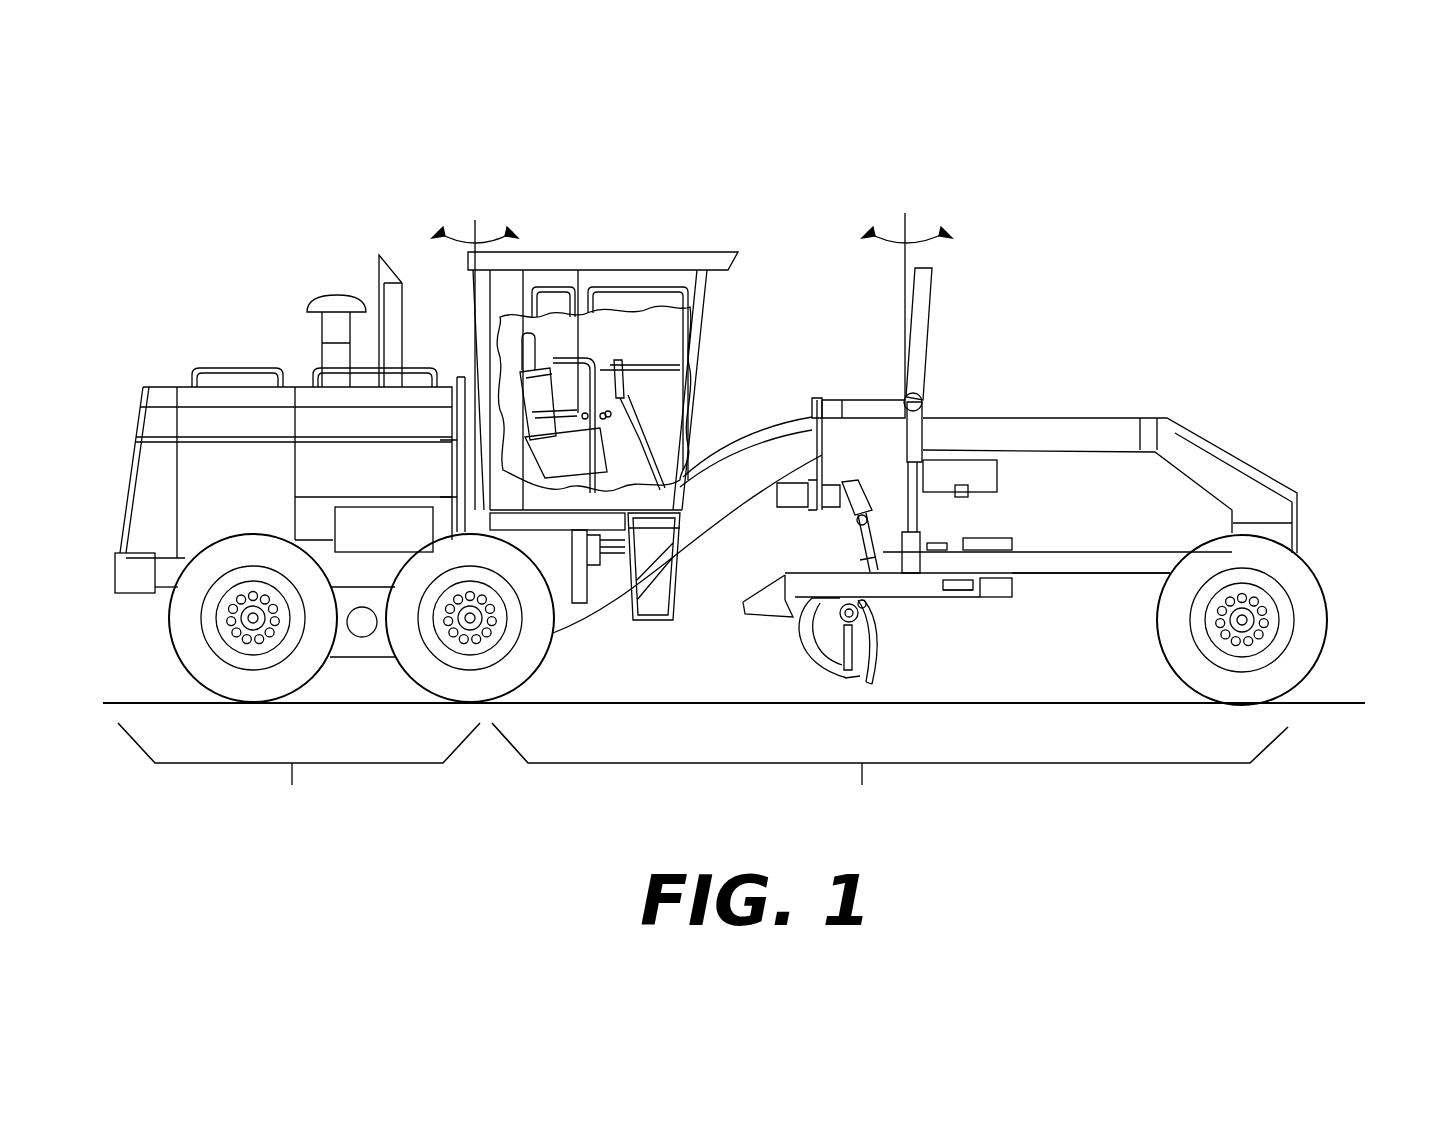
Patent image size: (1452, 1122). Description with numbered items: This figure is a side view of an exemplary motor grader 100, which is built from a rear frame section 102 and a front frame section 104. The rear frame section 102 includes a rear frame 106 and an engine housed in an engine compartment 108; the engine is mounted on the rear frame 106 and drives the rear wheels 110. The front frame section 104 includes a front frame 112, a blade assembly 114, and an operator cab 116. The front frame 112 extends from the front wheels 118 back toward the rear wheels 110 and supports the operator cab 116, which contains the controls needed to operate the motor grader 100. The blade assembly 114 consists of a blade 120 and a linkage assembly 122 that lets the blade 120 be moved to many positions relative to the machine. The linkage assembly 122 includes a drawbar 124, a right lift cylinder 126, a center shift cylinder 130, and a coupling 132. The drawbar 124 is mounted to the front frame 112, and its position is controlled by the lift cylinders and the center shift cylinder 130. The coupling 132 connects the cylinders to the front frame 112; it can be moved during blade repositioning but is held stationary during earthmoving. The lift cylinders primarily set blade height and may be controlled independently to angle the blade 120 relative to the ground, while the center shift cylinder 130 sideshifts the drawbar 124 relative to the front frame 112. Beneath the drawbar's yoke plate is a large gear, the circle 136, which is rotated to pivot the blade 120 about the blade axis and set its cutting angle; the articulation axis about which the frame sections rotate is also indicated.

The motor grader 100 is at (1109, 244).
The rear frame section 102 is at (299, 774).
The front frame section 104 is at (890, 774).
The rear frame 106 is at (344, 630).
The engine compartment 108 is at (188, 467).
The rear wheels 110 is at (188, 640).
The front frame 112 is at (1080, 433).
The blade assembly 114 is at (958, 604).
The operator cab 116 is at (713, 292).
The front wheels 118 is at (1328, 633).
The blade 120 is at (870, 668).
The linkage assembly 122 is at (973, 518).
The drawbar 124 is at (1128, 578).
The right lift cylinder 126 is at (930, 347).
The center shift cylinder 130 is at (842, 533).
The coupling 132 is at (843, 400).
The circle 136 is at (962, 598).